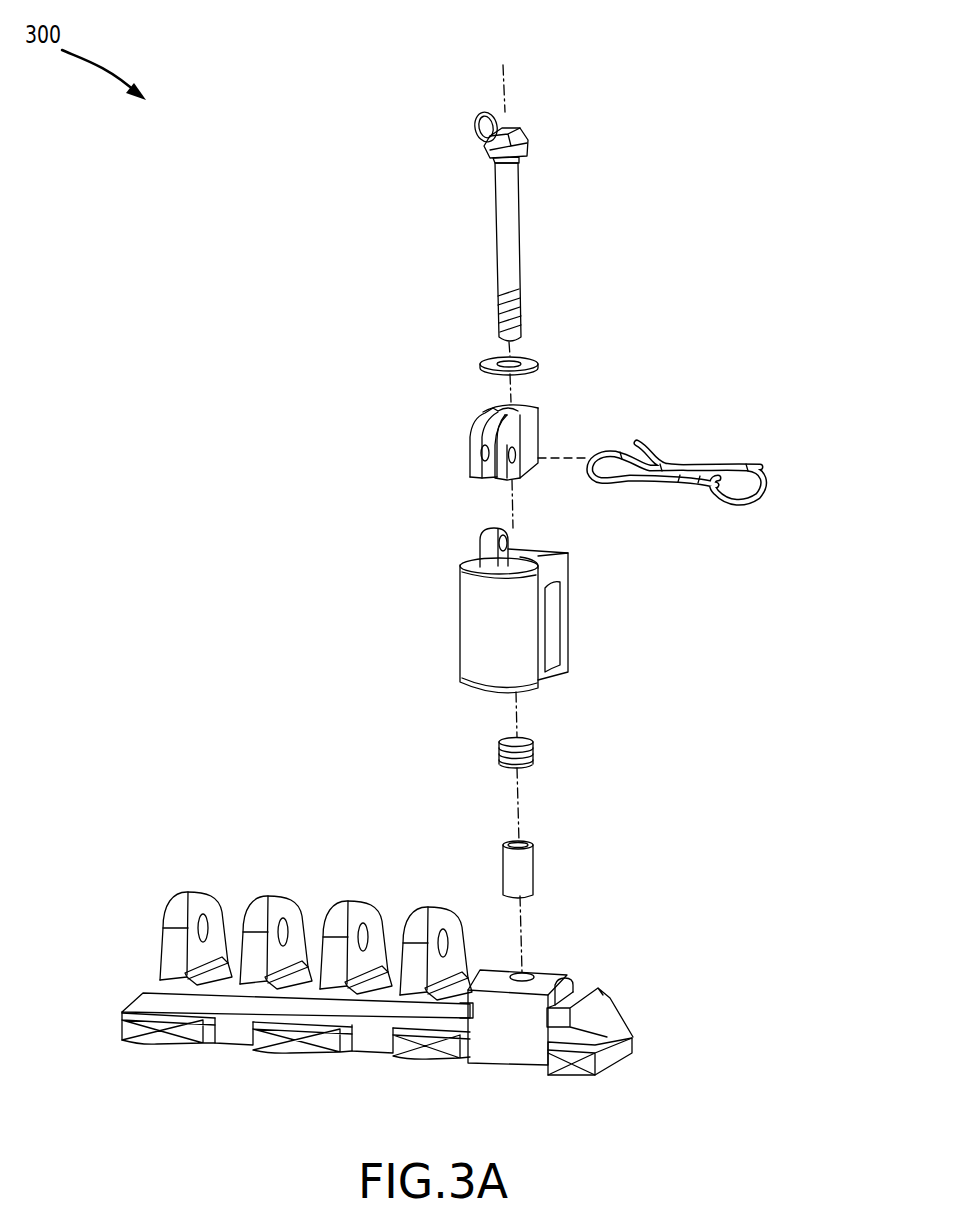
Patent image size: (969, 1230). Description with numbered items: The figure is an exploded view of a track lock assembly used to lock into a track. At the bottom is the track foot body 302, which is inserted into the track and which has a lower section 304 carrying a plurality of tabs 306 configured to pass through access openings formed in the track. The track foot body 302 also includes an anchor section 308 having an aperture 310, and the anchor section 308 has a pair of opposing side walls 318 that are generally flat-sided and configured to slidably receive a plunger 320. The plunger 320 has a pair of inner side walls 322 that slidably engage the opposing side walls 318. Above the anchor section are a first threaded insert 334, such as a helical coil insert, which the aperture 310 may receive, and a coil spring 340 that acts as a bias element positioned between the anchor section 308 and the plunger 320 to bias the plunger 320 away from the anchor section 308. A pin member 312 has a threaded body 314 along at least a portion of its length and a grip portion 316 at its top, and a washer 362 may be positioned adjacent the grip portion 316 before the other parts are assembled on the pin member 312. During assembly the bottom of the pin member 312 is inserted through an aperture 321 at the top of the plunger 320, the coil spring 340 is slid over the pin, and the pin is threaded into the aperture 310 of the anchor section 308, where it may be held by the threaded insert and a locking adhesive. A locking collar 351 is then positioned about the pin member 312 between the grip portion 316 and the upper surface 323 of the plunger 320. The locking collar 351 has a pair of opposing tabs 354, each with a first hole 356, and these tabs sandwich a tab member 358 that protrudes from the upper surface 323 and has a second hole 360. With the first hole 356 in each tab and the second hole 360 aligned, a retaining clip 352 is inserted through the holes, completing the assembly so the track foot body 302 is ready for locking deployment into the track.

The track foot body 302 is at (172, 950).
The lower section 304 is at (271, 1043).
The tabs 306 is at (125, 1033).
The anchor section 308 is at (565, 977).
The aperture 310 is at (527, 975).
The pin member 312 is at (508, 220).
The threaded body 314 is at (512, 303).
The grip portion 316 is at (520, 150).
The opposing side walls 318 is at (521, 1019).
The plunger 320 is at (505, 601).
The aperture 321 is at (520, 558).
The inner side walls 322 is at (552, 631).
The upper surface 323 is at (512, 573).
The first threaded insert 334 is at (530, 865).
The coil spring 340 is at (533, 752).
The locking collar 351 is at (502, 441).
The retaining clip 352 is at (762, 480).
The opposing tabs 354 is at (470, 425).
The first hole 356 is at (480, 462).
The tab member 358 is at (493, 538).
The second hole 360 is at (507, 545).
The washer 362 is at (525, 366).